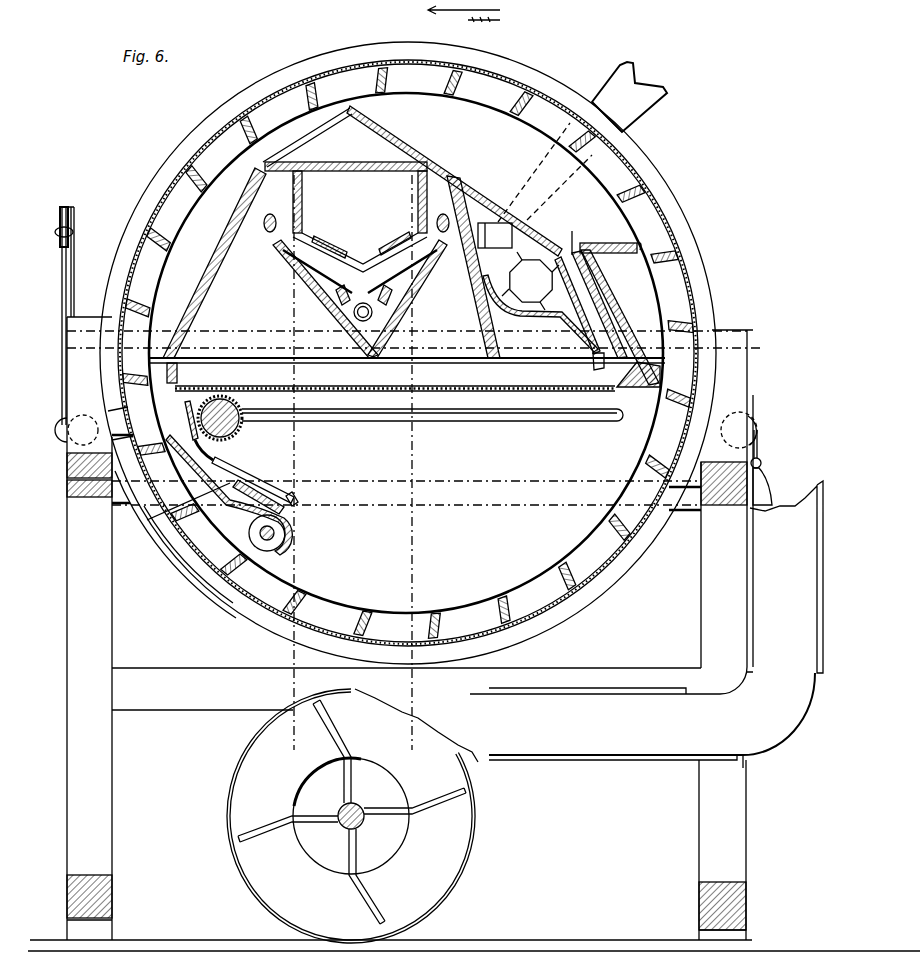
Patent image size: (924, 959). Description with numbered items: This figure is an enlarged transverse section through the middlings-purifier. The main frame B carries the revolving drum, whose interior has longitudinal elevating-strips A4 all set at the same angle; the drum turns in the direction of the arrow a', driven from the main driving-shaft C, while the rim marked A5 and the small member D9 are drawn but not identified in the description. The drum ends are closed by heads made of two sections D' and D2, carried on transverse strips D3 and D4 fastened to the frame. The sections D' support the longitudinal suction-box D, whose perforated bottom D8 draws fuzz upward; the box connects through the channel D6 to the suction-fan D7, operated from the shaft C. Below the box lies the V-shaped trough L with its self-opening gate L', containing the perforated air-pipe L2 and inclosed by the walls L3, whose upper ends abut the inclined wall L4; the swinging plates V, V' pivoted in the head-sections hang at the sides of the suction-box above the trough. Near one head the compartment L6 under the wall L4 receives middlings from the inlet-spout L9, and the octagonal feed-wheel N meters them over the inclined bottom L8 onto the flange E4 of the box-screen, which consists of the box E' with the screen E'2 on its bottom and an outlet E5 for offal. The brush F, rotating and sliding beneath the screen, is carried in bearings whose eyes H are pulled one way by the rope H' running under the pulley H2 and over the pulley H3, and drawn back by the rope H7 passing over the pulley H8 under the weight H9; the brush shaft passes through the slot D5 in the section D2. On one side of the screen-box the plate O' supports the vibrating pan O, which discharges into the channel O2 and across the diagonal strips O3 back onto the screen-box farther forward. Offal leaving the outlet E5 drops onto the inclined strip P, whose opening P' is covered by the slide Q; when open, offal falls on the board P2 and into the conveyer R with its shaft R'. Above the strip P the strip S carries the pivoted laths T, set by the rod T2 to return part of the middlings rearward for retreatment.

The arrow a' is at (464, 11).
The elevating-strips A4 is at (637, 183).
The drum outer ring A5 is at (189, 153).
The main frame B is at (93, 792).
The main driving-shaft C is at (367, 808).
The suction-box D is at (360, 221).
The head-section D' is at (406, 324).
The head-section D2 is at (370, 462).
The transverse strips D3 is at (755, 331).
The transverse strips D4 is at (692, 513).
The slot D5 is at (582, 402).
The channel D6 is at (364, 178).
The suction-fan D7 is at (463, 870).
The perforated bottom D8 is at (320, 240).
The flap valve D9 is at (405, 238).
The box E' is at (395, 377).
The screen E'2 is at (395, 419).
The bottom flange E4 is at (645, 393).
The outlet E5 is at (180, 380).
The brush F is at (241, 428).
The eye H is at (369, 353).
The rope H' is at (50, 316).
The pulley H2 is at (66, 433).
The pulley H3 is at (75, 224).
The rope H7 is at (762, 458).
The pulley H8 is at (758, 432).
The weight H9 is at (766, 490).
The V-shaped trough L is at (360, 277).
The self-opening gate L' is at (360, 299).
The pipe L2 is at (353, 322).
The longitudinal walls L3 is at (211, 285).
The inclined wall L4 is at (410, 152).
The compartment L6 is at (480, 250).
The inclined bottom L8 is at (558, 320).
The inlet-spout L9 is at (638, 68).
The middlings feed-wheel N is at (530, 281).
The vibrating pan O is at (609, 233).
The plate O' is at (649, 317).
The channel O2 is at (590, 279).
The inclined strips O3 is at (565, 235).
The inclined strip P is at (127, 423).
The longitudinal opening P' is at (175, 544).
The board P2 is at (193, 581).
The slide Q is at (153, 517).
The conveyer R is at (278, 539).
The shaft R' is at (256, 495).
The strip S is at (243, 466).
The laths T is at (262, 492).
The rod T2 is at (289, 491).
The swinging plate V is at (256, 236).
The swinging plate V' is at (443, 249).